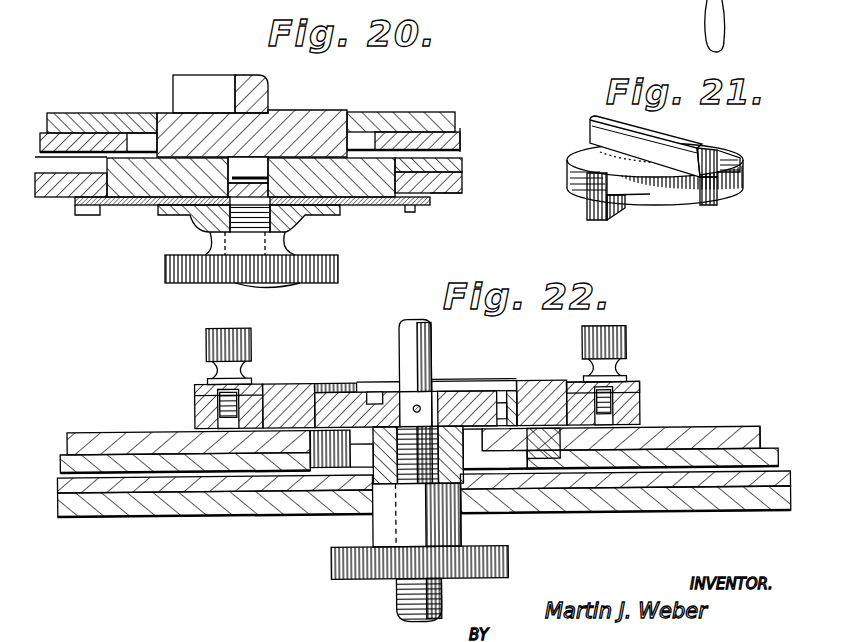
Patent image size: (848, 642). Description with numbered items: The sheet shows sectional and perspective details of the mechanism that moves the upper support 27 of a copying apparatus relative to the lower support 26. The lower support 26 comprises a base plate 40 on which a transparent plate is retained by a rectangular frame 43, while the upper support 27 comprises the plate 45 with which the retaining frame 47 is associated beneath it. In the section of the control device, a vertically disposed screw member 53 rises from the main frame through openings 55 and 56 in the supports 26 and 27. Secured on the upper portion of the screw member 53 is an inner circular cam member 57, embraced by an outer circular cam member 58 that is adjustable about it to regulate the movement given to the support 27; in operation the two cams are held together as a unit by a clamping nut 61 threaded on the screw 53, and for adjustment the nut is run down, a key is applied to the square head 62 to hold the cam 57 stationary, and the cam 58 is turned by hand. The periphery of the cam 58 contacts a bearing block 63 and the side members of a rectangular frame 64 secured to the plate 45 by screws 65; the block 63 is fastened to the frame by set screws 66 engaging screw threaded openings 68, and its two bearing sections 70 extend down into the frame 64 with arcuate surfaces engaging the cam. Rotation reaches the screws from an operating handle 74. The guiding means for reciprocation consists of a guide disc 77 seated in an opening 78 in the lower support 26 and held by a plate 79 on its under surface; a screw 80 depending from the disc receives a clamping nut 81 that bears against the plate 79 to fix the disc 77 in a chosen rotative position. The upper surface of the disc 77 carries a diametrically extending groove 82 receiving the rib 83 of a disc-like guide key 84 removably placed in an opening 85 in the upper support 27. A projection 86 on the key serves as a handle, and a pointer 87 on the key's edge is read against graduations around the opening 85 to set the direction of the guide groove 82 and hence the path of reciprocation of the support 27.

In FIG. 20, the lower support 26 is at (465, 188).
In FIG. 22, the lower support 26 is at (632, 520).
In FIG. 20, the upper support 27 is at (465, 141).
In FIG. 22, the upper support 27 is at (742, 430).
In FIG. 20, the base plate 40 is at (452, 196).
In FIG. 22, the base plate 40 is at (656, 517).
In FIG. 20, the rectangular frame 43 is at (465, 166).
In FIG. 22, the rectangular frame 43 is at (758, 493).
In FIG. 20, the plate 45 is at (440, 112).
In FIG. 22, the plate 45 is at (756, 442).
In FIG. 20, the retaining frame 47 is at (462, 132).
In FIG. 22, the retaining frame 47 is at (782, 459).
In FIG. 22, the screw member 53 is at (392, 600).
In FIG. 22, the opening 55 is at (338, 508).
In FIG. 22, the opening 56 is at (322, 482).
In FIG. 22, the inner circular cam member 57 is at (478, 395).
In FIG. 22, the outer circular cam member 58 is at (340, 392).
In FIG. 22, the clamping nut 61 is at (452, 531).
In FIG. 22, the square head 62 is at (432, 349).
In FIG. 22, the bearing block 63 is at (557, 385).
In FIG. 22, the rectangular frame 64 is at (200, 414).
In FIG. 22, the screws 65 is at (640, 389).
In FIG. 22, the set screws 66 is at (207, 350).
In FIG. 22, the screw threaded openings 68 is at (594, 432).
In FIG. 22, the bearing sections 70 is at (533, 388).
In FIG. 21, the operating handle 74 is at (726, 27).
In FIG. 20, the guide disc 77 is at (374, 203).
In FIG. 20, the opening 78 is at (405, 207).
In FIG. 20, the plate 79 is at (127, 206).
In FIG. 20, the screw 80 is at (298, 228).
In FIG. 20, the clamping nut 81 is at (218, 265).
In FIG. 20, the guide groove 82 is at (268, 175).
In FIG. 20, the rib 83 is at (248, 165).
In FIG. 21, the rib 83 is at (623, 214).
In FIG. 20, the guide key 84 is at (165, 113).
In FIG. 21, the guide key 84 is at (703, 192).
In FIG. 20, the opening 85 is at (365, 122).
In FIG. 20, the projection 86 is at (205, 78).
In FIG. 21, the projection 86 is at (648, 120).
In FIG. 21, the pointer 87 is at (607, 175).